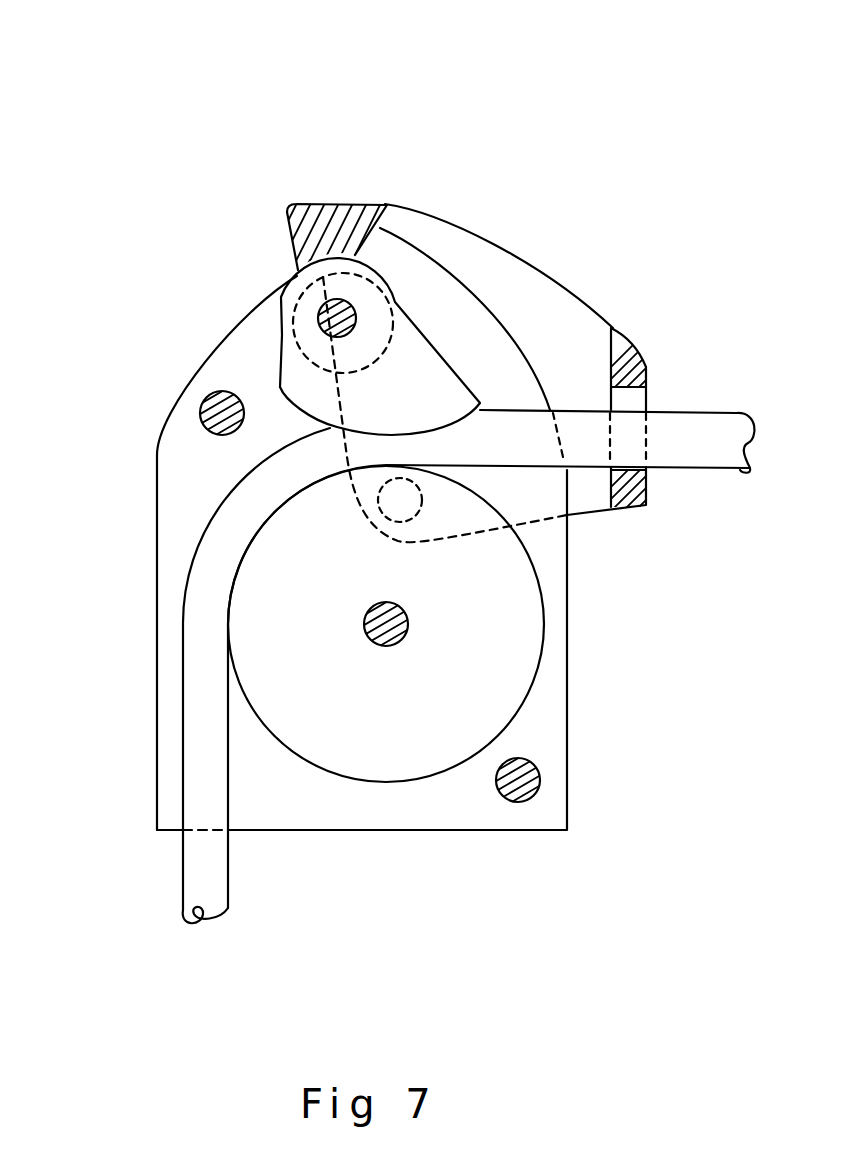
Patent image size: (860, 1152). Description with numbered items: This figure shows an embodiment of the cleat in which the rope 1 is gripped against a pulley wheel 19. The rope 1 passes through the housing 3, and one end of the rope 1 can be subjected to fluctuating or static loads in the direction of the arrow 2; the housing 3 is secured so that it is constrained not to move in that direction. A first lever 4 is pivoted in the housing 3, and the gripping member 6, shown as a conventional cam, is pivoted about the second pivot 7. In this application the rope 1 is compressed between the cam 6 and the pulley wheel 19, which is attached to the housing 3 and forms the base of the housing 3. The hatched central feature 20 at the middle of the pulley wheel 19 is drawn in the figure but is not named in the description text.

The tube 1 is at (202, 748).
The flow direction 2 is at (202, 930).
The housing 3 is at (458, 797).
The cover arm 4 is at (560, 333).
The lever 6 is at (410, 380).
The pivot pin 7 is at (350, 302).
The wheel 19 is at (460, 685).
The hub 20 is at (405, 622).